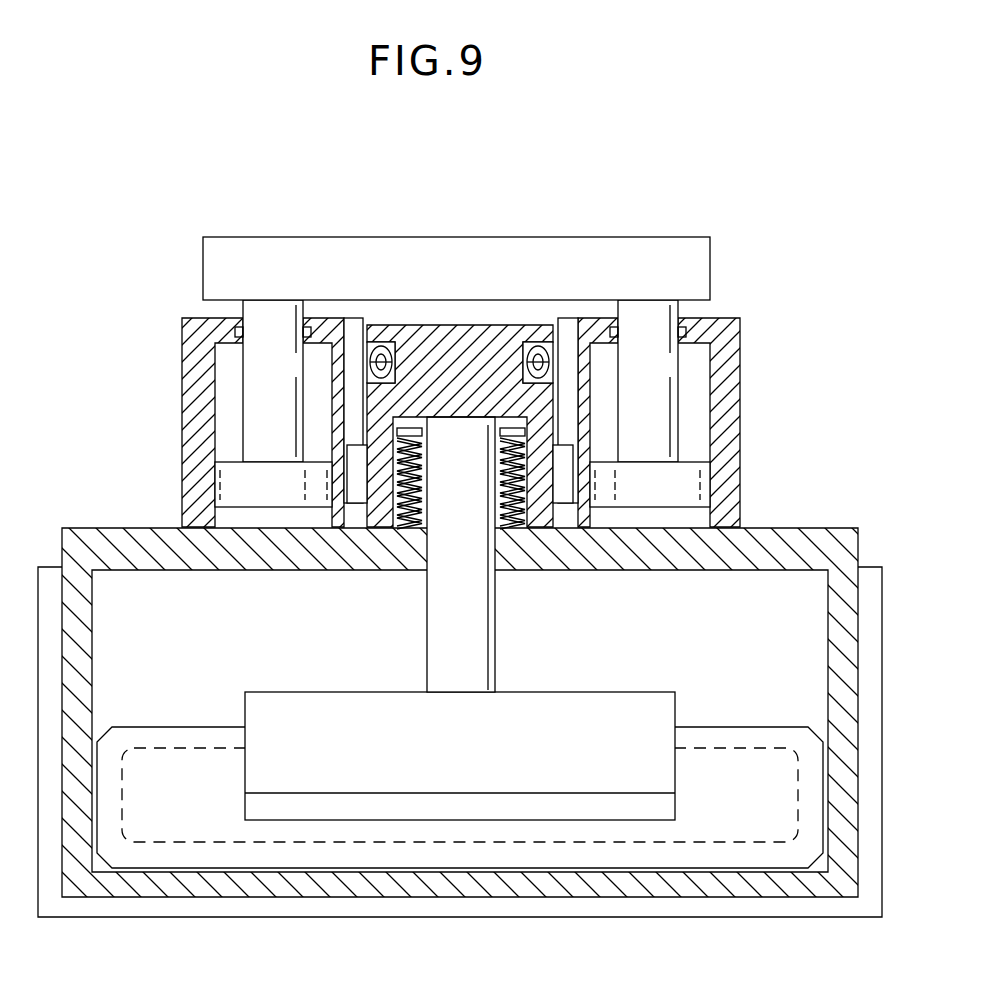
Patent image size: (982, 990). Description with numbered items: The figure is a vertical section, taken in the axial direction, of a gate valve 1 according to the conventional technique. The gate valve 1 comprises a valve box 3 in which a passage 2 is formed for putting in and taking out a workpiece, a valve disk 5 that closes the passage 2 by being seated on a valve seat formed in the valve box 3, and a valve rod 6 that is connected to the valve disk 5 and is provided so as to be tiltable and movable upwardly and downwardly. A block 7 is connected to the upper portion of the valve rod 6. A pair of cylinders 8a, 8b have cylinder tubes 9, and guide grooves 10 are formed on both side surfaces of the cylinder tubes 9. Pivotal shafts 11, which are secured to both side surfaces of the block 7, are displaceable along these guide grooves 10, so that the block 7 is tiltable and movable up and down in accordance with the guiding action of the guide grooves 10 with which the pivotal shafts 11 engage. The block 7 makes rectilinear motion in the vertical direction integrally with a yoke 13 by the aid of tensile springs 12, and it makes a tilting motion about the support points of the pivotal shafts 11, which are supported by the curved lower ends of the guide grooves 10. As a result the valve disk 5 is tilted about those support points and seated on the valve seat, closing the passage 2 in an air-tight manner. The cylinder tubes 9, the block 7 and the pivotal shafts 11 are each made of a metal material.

The gate valve 1 is at (763, 172).
The passage 2 is at (729, 757).
The valve box 3 is at (840, 656).
The valve disk 5 is at (725, 866).
The valve rod 6 is at (488, 628).
The block 7 is at (465, 337).
The cylinder 8a is at (235, 407).
The cylinder 8b is at (690, 425).
The cylinder tube 9 is at (190, 438).
The guide groove 10 is at (347, 358).
The pivotal shaft 11 is at (358, 483).
The tensile spring 12 is at (392, 340).
The yoke 13 is at (645, 250).